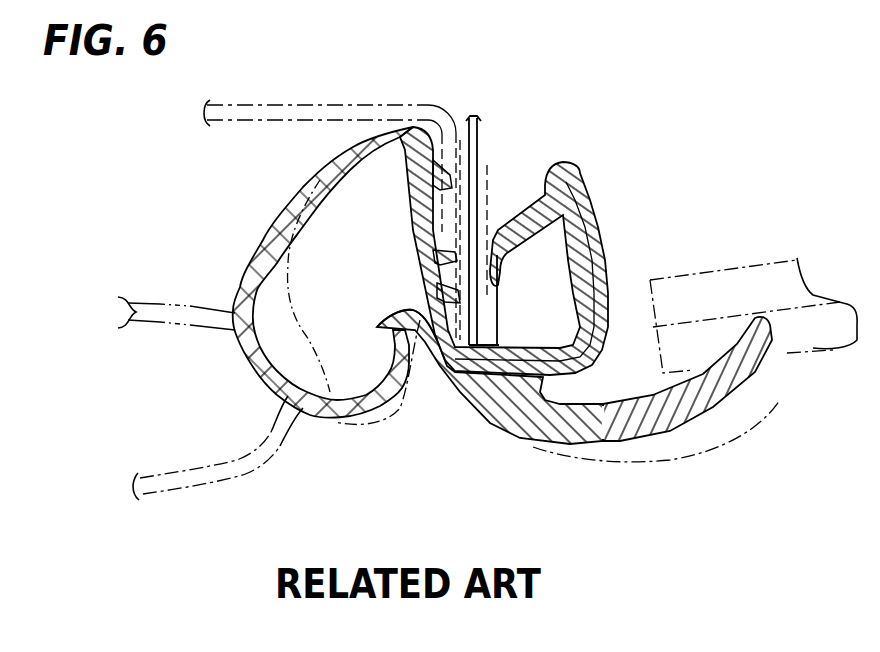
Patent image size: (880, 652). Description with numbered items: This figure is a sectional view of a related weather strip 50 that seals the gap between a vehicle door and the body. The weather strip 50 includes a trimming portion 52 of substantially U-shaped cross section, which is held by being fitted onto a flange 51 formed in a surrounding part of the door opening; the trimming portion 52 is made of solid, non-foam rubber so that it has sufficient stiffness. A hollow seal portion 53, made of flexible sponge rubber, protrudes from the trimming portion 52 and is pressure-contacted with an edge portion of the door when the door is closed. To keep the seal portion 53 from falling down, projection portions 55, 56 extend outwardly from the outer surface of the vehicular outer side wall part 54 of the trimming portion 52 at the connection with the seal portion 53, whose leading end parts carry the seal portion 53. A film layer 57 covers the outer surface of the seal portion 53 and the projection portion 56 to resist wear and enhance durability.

The weather strip 50 is at (502, 329).
The flange 51 is at (501, 298).
The trimming portion 52 is at (616, 231).
The hollow seal portion 53 is at (237, 290).
The vehicular outer side wall part 54 is at (420, 250).
The projection portion 55 is at (397, 333).
The projection portion 56 is at (360, 165).
The film layer 57 is at (302, 200).